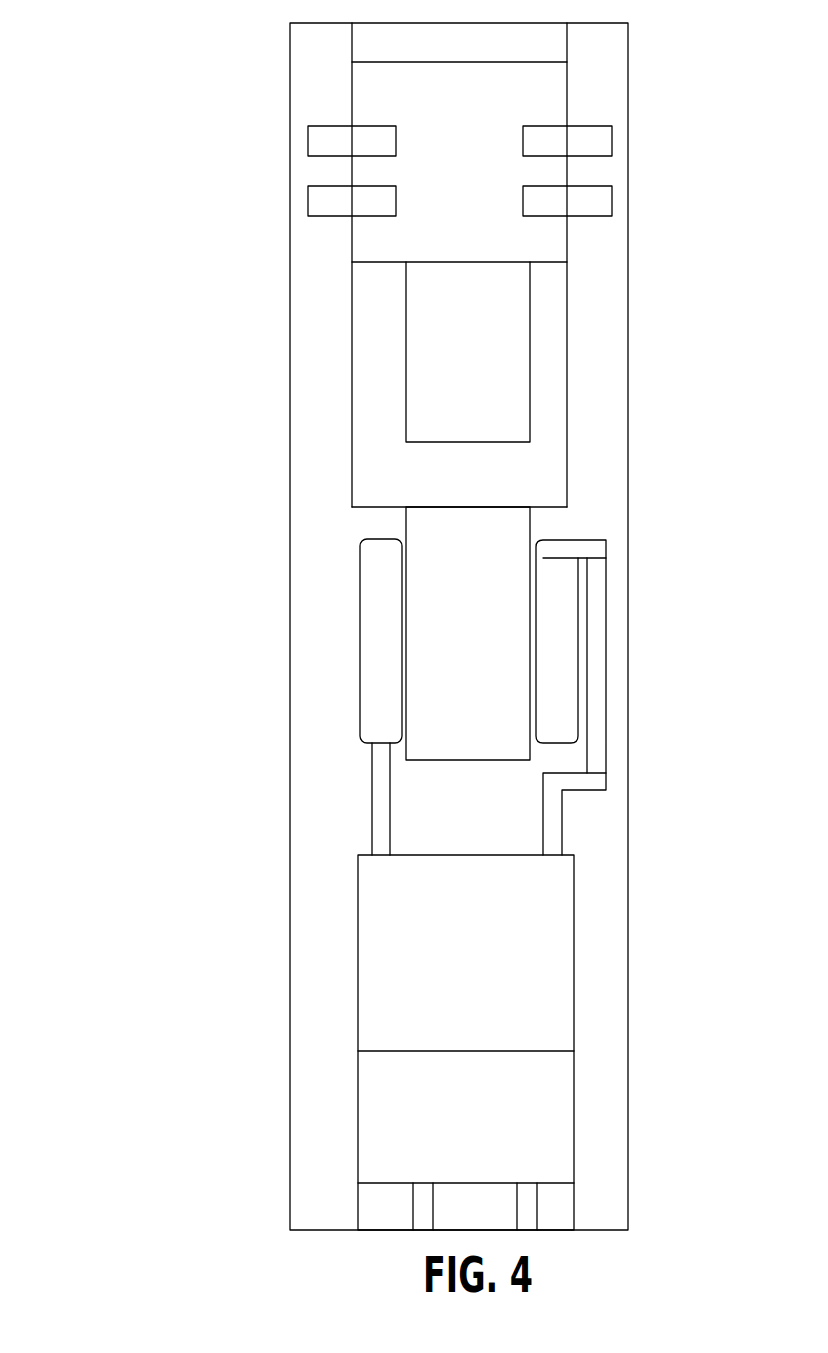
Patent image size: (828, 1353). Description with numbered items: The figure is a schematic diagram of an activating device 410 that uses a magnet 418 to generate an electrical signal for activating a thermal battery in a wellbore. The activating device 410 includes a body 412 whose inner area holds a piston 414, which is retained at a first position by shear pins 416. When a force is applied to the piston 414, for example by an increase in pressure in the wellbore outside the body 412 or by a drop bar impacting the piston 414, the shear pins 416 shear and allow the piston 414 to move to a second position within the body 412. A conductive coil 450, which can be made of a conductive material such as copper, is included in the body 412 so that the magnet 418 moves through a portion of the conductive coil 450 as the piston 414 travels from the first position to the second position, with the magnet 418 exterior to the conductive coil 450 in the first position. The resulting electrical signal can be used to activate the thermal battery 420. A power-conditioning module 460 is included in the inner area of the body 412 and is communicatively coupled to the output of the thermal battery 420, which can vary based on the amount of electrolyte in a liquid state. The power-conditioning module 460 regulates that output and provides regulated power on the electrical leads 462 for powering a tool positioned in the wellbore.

The activating device 410 is at (183, 88).
The body 412 is at (288, 23).
The piston 414 is at (353, 78).
The shear pins 416 is at (308, 193).
The magnet 418 is at (412, 340).
The conductive coil 450 is at (365, 628).
The thermal battery 420 is at (357, 937).
The power-conditioning module 460 is at (357, 1067).
The electrical leads 462 is at (415, 1222).